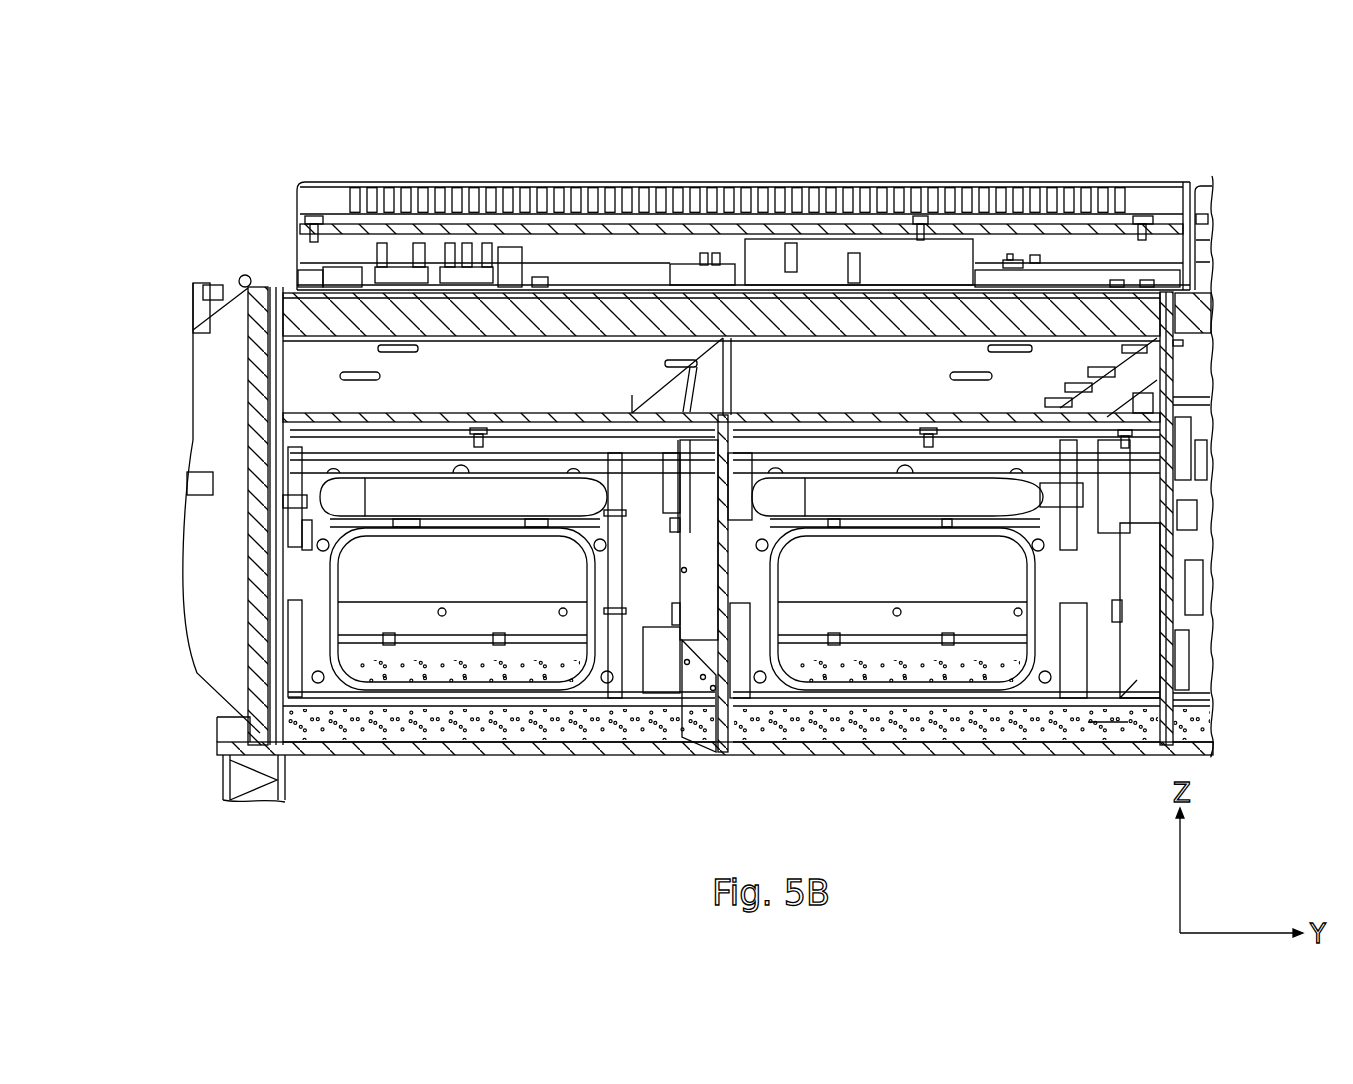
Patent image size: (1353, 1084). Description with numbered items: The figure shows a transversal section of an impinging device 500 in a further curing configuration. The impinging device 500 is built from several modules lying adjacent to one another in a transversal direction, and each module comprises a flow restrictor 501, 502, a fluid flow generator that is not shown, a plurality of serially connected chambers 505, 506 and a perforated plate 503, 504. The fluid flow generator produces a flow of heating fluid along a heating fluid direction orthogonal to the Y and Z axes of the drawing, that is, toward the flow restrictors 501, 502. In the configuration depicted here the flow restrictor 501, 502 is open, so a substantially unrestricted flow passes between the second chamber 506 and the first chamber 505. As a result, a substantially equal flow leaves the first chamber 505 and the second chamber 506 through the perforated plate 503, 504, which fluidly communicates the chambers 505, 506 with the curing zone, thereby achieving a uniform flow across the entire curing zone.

The impinging device 500 is at (1214, 158).
The flow restrictor 501 is at (1023, 488).
The flow restrictor 502 is at (393, 487).
The perforated plate 503 is at (866, 720).
The perforated plate 504 is at (552, 718).
The first chamber 505 is at (398, 585).
The second chamber 506 is at (330, 729).